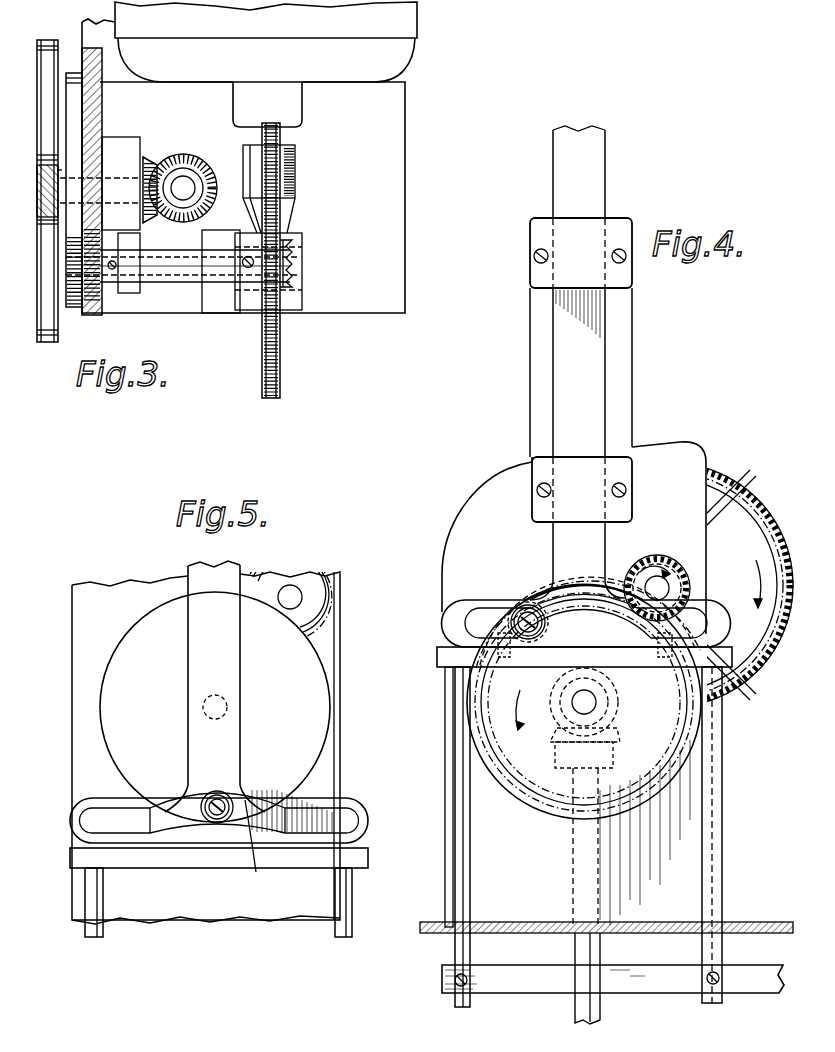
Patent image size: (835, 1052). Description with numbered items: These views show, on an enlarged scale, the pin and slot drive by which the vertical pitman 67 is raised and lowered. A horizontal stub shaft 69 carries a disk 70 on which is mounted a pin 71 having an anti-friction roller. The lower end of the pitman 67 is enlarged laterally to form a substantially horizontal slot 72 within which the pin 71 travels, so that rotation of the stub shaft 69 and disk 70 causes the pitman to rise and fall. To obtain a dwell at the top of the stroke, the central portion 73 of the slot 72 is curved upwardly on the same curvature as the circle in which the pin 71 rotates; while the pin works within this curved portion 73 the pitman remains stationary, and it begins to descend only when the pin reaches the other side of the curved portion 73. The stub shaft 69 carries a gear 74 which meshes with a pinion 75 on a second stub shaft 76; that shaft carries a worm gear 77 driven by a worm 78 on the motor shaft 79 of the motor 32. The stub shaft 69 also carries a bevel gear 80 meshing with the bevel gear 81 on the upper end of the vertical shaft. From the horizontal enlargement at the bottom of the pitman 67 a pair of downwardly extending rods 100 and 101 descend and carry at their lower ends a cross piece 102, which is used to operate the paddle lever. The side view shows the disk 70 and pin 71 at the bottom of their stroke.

In FIG. 3, the motor 32 is at (420, 22).
In FIG. 4, the vertical pitman 67 is at (596, 386).
In FIG. 5, the vertical pitman 67 is at (233, 574).
In FIG. 3, the horizontal stub shaft 69 is at (48, 204).
In FIG. 4, the horizontal stub shaft 69 is at (586, 703).
In FIG. 5, the horizontal stub shaft 69 is at (205, 712).
In FIG. 3, the disk 70 is at (77, 303).
In FIG. 4, the disk 70 is at (584, 755).
In FIG. 5, the disk 70 is at (215, 707).
In FIG. 4, the pin 71 is at (529, 604).
In FIG. 5, the pin 71 is at (232, 797).
In FIG. 4, the horizontal slot 72 is at (481, 614).
In FIG. 5, the horizontal slot 72 is at (330, 808).
In FIG. 4, the curved central portion 73 is at (586, 592).
In FIG. 5, the curved central portion 73 is at (259, 848).
In FIG. 3, the gear 74 is at (100, 108).
In FIG. 4, the gear 74 is at (522, 764).
In FIG. 3, the pinion 75 is at (76, 272).
In FIG. 4, the pinion 75 is at (665, 560).
In FIG. 5, the pinion 75 is at (291, 594).
In FIG. 3, the stub shaft 76 is at (178, 270).
In FIG. 3, the worm gear 77 is at (281, 360).
In FIG. 4, the worm gear 77 is at (743, 490).
In FIG. 3, the worm 78 is at (291, 264).
In FIG. 3, the motor shaft 79 is at (282, 133).
In FIG. 3, the bevel gear 80 is at (150, 160).
In FIG. 3, the bevel gear 81 is at (198, 164).
In FIG. 4, the downwardly extending rod 100 is at (460, 876).
In FIG. 5, the downwardly extending rod 100 is at (90, 894).
In FIG. 4, the downwardly extending rod 101 is at (722, 847).
In FIG. 5, the downwardly extending rod 101 is at (346, 900).
In FIG. 4, the cross piece 102 is at (518, 984).